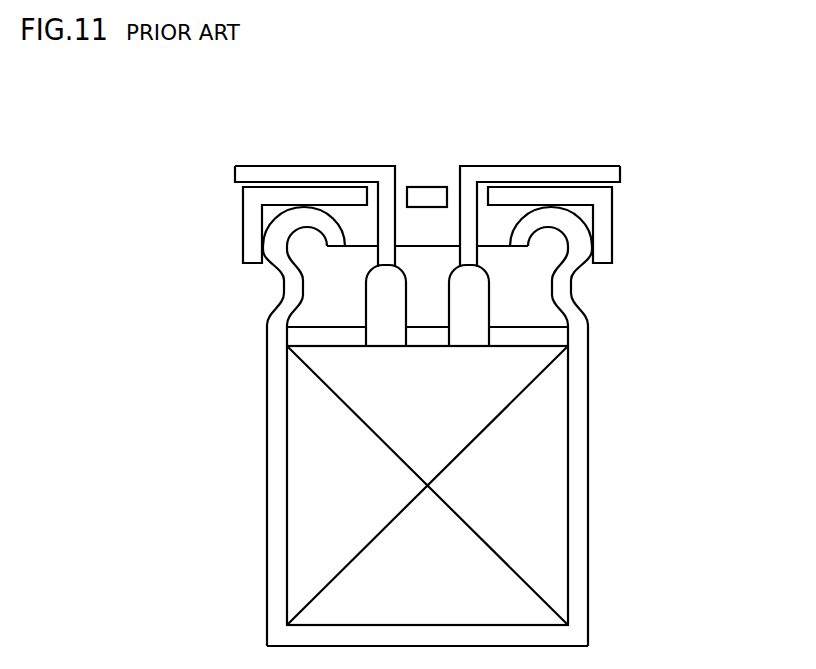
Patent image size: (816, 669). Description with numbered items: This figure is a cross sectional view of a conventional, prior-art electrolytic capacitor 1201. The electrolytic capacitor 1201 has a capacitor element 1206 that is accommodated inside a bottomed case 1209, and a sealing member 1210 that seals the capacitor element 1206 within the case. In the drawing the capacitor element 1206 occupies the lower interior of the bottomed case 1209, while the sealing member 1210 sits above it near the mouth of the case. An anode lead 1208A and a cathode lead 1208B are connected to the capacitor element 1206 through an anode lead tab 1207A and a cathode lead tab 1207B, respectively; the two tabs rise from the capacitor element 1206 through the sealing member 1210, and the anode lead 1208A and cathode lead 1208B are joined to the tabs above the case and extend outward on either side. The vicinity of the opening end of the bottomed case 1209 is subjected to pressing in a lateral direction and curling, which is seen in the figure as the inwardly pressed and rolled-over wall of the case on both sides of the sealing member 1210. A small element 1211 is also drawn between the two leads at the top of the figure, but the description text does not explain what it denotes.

The electrolytic capacitor 1201 is at (452, 80).
The capacitor element 1206 is at (327, 465).
The anode lead tab 1207A is at (387, 307).
The cathode lead tab 1207B is at (480, 313).
The anode lead 1208A is at (312, 172).
The cathode lead 1208B is at (547, 172).
The bottomed case 1209 is at (582, 432).
The sealing member 1210 is at (522, 292).
The insulating member 1211 is at (425, 195).